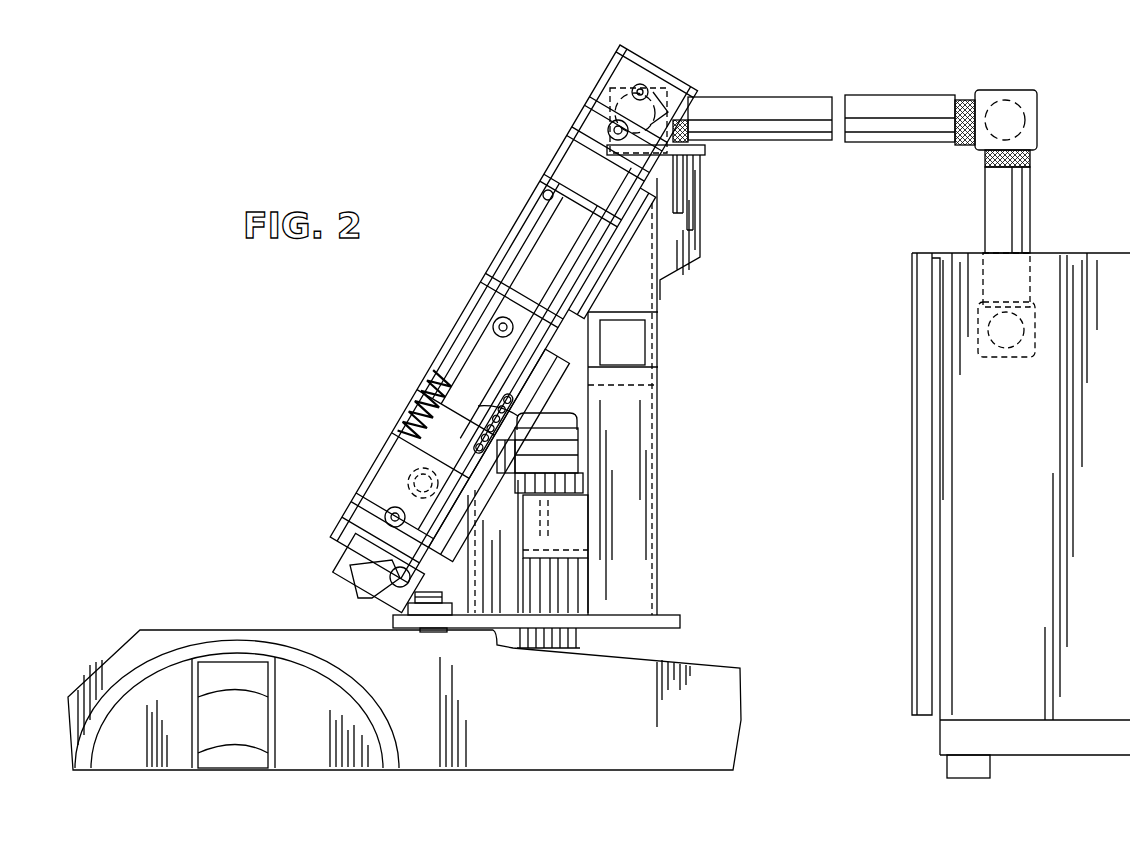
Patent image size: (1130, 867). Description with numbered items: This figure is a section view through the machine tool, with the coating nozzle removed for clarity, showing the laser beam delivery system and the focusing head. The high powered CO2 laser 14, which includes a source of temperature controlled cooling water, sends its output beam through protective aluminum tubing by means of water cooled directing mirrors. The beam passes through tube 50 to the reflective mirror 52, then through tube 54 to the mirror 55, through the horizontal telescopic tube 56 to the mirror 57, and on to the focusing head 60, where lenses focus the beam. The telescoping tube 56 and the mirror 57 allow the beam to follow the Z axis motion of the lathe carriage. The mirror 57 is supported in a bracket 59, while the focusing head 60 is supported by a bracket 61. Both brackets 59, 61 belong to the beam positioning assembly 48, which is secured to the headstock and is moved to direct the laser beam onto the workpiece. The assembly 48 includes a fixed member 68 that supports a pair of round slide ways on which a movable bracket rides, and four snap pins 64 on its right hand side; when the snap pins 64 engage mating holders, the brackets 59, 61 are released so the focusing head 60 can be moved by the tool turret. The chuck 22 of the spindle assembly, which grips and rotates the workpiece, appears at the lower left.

The laser 14 is at (1065, 255).
The chuck 22 is at (327, 707).
The beam positioning assembly 48 is at (513, 179).
The tube 50 is at (1028, 183).
The reflective mirror 52 is at (1037, 122).
The tube 54 is at (765, 97).
The mirror 55 is at (652, 92).
The telescopic tube 56 is at (690, 112).
The mirror 57 is at (697, 90).
The bracket 59 is at (585, 113).
The focusing head 60 is at (350, 583).
The bracket 61 is at (392, 455).
The snap pins 64 is at (612, 126).
The fixed member 68 is at (644, 618).